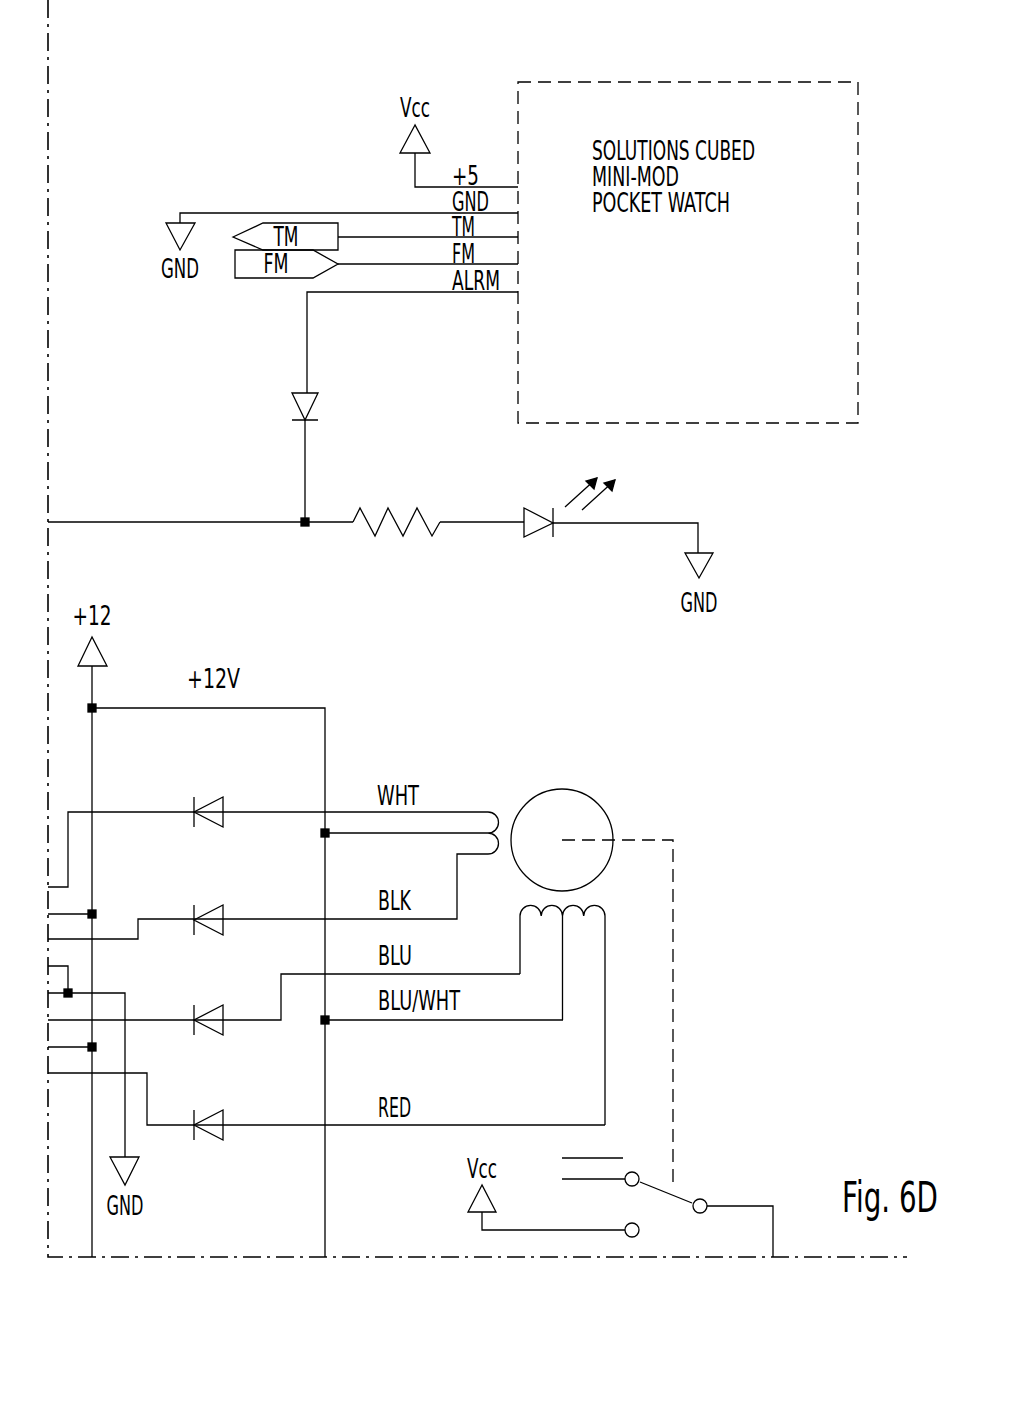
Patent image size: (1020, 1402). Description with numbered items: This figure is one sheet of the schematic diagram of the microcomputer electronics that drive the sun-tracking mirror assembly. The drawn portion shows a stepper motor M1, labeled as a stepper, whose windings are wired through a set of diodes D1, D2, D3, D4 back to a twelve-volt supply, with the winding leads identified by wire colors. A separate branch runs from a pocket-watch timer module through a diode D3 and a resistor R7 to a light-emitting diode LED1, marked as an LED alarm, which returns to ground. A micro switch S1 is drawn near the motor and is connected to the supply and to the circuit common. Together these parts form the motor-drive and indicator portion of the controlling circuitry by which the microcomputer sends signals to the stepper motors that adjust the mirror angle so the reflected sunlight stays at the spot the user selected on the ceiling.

The diode D1 is at (208, 794).
The diode D2 is at (208, 902).
The diode D3 is at (275, 714).
The diode D4 is at (208, 1108).
The resistor R7 is at (396, 505).
The LED alarm indicator LED1 is at (567, 539).
The stepper motor M1 is at (562, 920).
The micro switch S1 is at (672, 1184).